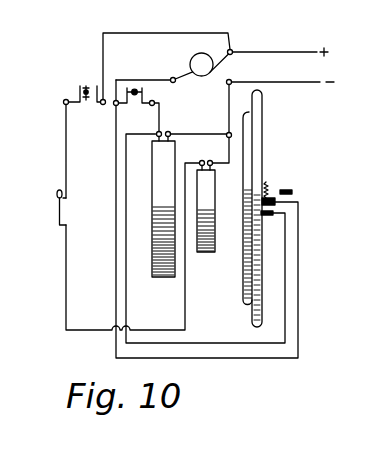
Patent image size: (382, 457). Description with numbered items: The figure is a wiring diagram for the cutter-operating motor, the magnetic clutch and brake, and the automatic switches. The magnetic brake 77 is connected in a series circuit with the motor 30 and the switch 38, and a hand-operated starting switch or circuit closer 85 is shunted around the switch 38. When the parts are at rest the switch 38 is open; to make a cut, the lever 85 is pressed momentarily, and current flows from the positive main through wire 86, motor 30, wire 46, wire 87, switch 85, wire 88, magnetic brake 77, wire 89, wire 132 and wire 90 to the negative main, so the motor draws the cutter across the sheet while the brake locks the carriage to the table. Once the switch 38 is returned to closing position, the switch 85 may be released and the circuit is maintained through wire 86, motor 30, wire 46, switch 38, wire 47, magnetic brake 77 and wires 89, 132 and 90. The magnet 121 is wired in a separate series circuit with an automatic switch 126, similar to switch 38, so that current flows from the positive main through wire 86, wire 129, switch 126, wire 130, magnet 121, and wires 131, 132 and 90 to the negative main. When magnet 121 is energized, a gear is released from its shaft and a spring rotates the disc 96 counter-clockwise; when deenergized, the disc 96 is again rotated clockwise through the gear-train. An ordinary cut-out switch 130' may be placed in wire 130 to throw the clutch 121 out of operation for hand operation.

The wire 129 is at (153, 33).
The wire 86 is at (260, 52).
The wire 90 is at (265, 82).
The automatic switch 126 is at (80, 86).
The wire 46 is at (125, 80).
The motor 30 is at (202, 76).
The switch 38 is at (134, 95).
The wire 47 is at (159, 112).
The wire 89 is at (180, 134).
The wire 131 is at (228, 138).
The wire 132 is at (229, 108).
The magnet 121 is at (207, 202).
The magnetic brake 77 is at (165, 267).
The wire 130 is at (127, 218).
The cut-out switch 130' is at (35, 213).
The wire 87 is at (116, 176).
The wire 88 is at (126, 231).
The starting switch 85 is at (283, 192).
The disc 96 is at (256, 301).